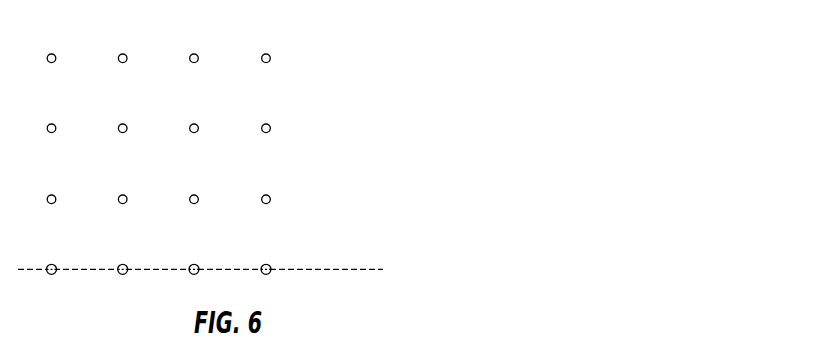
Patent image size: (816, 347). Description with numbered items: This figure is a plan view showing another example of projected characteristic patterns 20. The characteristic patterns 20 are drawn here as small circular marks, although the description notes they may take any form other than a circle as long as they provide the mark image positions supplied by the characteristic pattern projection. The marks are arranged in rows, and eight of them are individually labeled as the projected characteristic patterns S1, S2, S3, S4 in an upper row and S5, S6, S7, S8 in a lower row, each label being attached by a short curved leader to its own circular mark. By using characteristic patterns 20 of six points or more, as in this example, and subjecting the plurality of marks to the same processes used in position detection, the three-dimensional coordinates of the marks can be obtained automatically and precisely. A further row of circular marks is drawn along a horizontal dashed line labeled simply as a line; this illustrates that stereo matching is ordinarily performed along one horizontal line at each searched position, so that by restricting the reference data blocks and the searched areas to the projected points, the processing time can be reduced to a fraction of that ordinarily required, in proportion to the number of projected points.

The characteristic patterns 20 is at (385, 47).
The projected characteristic pattern S1 is at (51, 124).
The projected characteristic pattern S2 is at (122, 124).
The projected characteristic pattern S3 is at (194, 124).
The projected characteristic pattern S4 is at (266, 124).
The projected characteristic pattern S5 is at (51, 194).
The projected characteristic pattern S6 is at (122, 194).
The projected characteristic pattern S7 is at (194, 194).
The projected characteristic pattern S8 is at (266, 194).